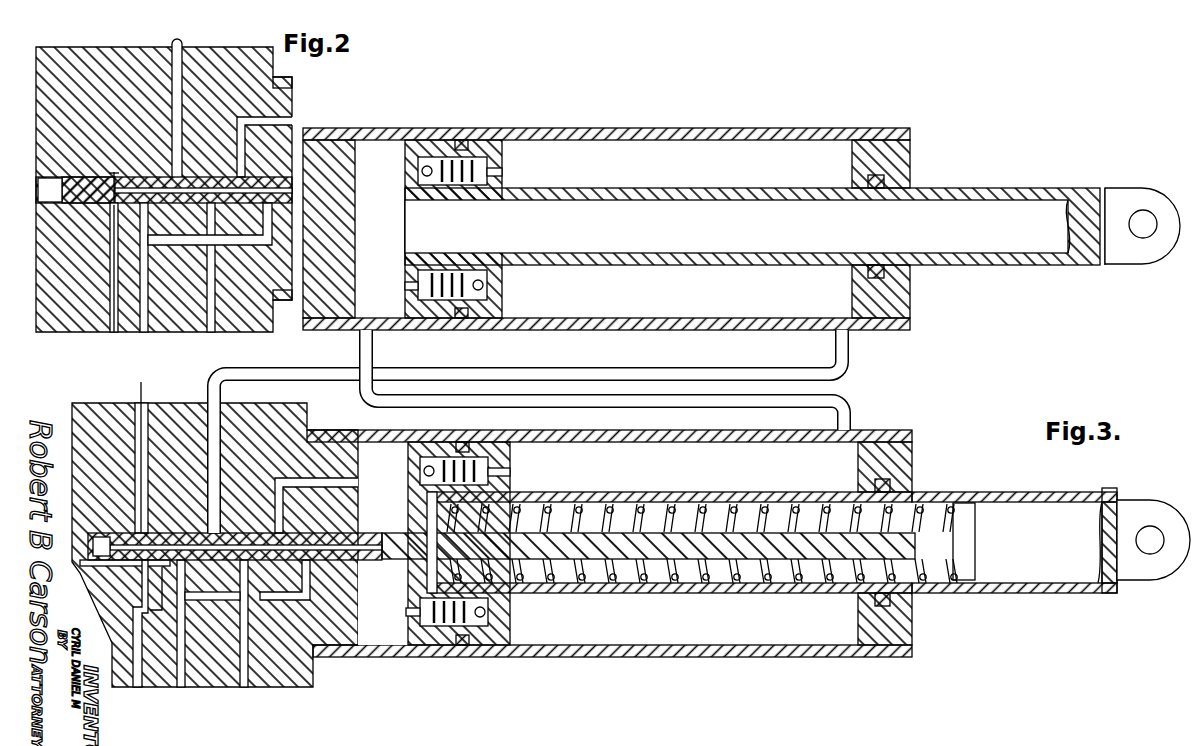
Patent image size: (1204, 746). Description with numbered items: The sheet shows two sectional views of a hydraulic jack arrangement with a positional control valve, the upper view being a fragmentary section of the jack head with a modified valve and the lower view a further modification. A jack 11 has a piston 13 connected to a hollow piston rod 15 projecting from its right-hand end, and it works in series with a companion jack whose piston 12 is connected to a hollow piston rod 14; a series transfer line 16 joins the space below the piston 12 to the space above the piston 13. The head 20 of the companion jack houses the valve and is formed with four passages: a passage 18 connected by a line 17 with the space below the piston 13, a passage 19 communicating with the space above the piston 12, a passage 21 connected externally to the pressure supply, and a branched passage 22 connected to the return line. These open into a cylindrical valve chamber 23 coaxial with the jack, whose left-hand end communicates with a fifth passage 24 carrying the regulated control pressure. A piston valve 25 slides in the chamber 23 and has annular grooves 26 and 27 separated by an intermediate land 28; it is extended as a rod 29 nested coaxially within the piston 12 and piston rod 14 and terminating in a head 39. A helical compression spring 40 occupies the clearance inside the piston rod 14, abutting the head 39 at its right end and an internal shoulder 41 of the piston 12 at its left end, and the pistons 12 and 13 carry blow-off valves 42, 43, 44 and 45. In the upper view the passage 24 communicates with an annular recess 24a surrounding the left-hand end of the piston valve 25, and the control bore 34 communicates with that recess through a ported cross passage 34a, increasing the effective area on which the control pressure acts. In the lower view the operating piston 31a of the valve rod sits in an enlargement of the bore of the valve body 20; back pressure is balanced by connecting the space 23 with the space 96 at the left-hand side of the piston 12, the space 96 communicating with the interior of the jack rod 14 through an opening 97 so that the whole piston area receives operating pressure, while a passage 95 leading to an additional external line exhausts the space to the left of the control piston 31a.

In FIG. 2, the jack 11 is at (905, 328).
In FIG. 3, the piston 12 is at (432, 491).
In FIG. 2, the piston 13 is at (405, 199).
In FIG. 3, the hollow piston rod 14 is at (1040, 594).
In FIG. 2, the hollow piston rod 15 is at (992, 257).
In FIG. 2, the series transfer line 16 is at (848, 410).
In FIG. 2, the line 17 is at (843, 352).
In FIG. 3, the passage 18 is at (215, 425).
In FIG. 2, the passage 18 is at (178, 63).
In FIG. 3, the passage 19 is at (320, 480).
In FIG. 2, the passage 19 is at (266, 122).
In FIG. 3, the head 20 is at (113, 688).
In FIG. 2, the head 20 is at (95, 312).
In FIG. 3, the passage 21 is at (252, 686).
In FIG. 2, the passage 21 is at (212, 325).
In FIG. 3, the branched passage 22 is at (182, 686).
In FIG. 2, the branched passage 22 is at (144, 330).
In FIG. 3, the valve chamber 23 is at (235, 546).
In FIG. 2, the valve chamber 23 is at (164, 190).
In FIG. 3, the passage 24 is at (135, 684).
In FIG. 2, the passage 24 is at (108, 330).
In FIG. 2, the annular recess 24a is at (118, 176).
In FIG. 3, the piston valve 25 is at (155, 686).
In FIG. 2, the piston valve 25 is at (118, 332).
In FIG. 3, the annular groove 26 is at (222, 601).
In FIG. 3, the annular groove 27 is at (340, 565).
In FIG. 3, the intermediate land 28 is at (315, 660).
In FIG. 2, the intermediate land 28 is at (254, 323).
In FIG. 3, the rod 29 is at (710, 503).
In FIG. 3, the operating piston 31a is at (140, 452).
In FIG. 2, the passage 34 is at (292, 157).
In FIG. 2, the ported cross passage 34a is at (78, 173).
In FIG. 3, the head 39 is at (962, 522).
In FIG. 3, the helical compression spring 40 is at (720, 590).
In FIG. 3, the internal shoulder 41 is at (447, 583).
In FIG. 3, the blow-off valve 42 is at (500, 613).
In FIG. 3, the blow-off valve 43 is at (425, 465).
In FIG. 2, the blow-off valve 44 is at (488, 284).
In FIG. 2, the blow-off valve 45 is at (425, 172).
In FIG. 3, the passage 95 is at (135, 400).
In FIG. 3, the space 96 is at (398, 622).
In FIG. 3, the opening 97 is at (432, 528).